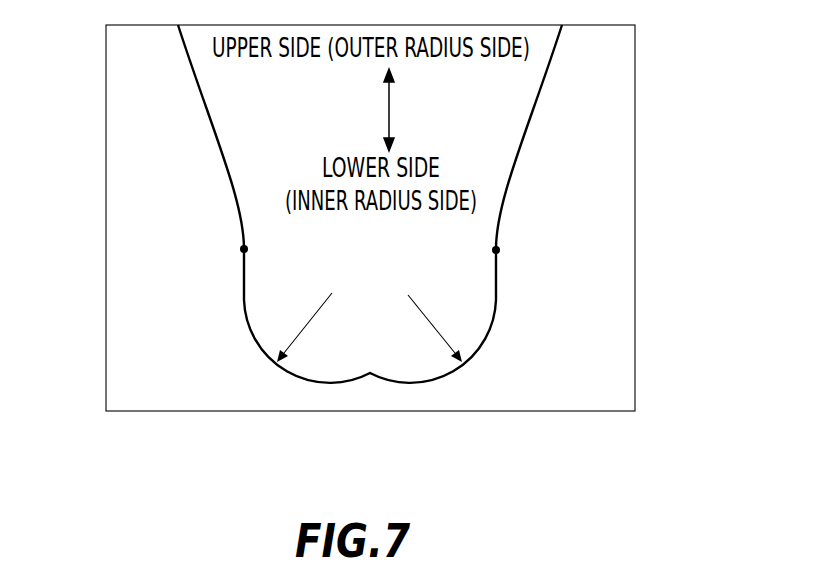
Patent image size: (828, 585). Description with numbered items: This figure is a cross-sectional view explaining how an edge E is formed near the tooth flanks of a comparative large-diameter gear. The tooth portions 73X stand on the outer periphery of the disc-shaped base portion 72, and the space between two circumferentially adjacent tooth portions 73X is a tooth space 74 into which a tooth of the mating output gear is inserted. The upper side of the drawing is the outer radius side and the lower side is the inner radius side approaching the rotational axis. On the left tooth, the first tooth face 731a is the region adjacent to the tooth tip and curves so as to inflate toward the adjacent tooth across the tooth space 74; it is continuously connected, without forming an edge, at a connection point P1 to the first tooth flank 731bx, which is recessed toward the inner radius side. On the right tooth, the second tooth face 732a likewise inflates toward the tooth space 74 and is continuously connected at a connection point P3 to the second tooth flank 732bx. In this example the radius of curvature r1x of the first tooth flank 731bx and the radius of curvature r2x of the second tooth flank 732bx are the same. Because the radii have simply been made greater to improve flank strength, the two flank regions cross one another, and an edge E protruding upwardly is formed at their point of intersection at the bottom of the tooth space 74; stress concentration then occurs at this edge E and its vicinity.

The base portion 72 is at (492, 409).
The tooth portion 73X is at (371, 137).
The first tooth face 731a is at (238, 177).
The second tooth face 732a is at (502, 177).
The first tooth flank 731bx is at (258, 328).
The second tooth flank 732bx is at (490, 327).
The tooth space 74 is at (335, 257).
The connection point P1 is at (242, 249).
The connection point P3 is at (498, 250).
The radius of curvature r1x is at (317, 327).
The radius of curvature r2x is at (443, 325).
The edge E is at (371, 375).